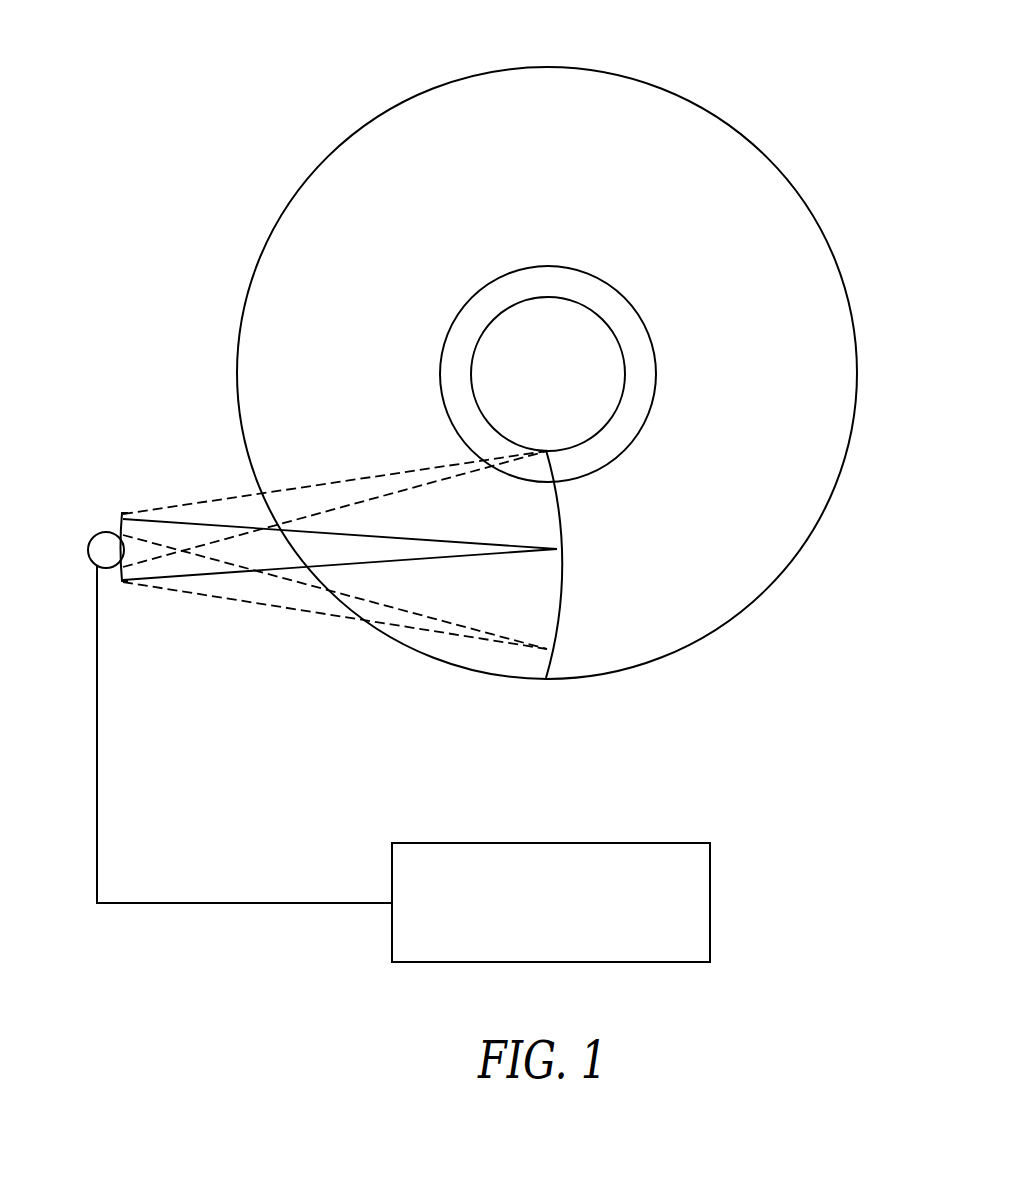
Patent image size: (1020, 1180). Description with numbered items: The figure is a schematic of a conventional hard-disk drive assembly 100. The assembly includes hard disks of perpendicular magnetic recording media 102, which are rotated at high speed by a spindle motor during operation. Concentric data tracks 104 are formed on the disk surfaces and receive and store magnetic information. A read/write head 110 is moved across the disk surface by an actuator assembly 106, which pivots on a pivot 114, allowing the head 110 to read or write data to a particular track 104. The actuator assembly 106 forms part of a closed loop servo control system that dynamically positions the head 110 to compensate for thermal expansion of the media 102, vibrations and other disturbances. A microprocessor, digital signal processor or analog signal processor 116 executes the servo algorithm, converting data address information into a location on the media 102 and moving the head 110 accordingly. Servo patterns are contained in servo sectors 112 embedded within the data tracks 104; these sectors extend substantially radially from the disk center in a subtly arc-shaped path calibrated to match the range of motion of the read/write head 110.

The hard-disk drive assembly 100 is at (255, 86).
The perpendicular magnetic recording media 102 is at (563, 147).
The concentric data tracks 104 is at (657, 372).
The actuator assembly 106 is at (156, 480).
The read/write head 110 is at (488, 555).
The servo sectors 112 is at (562, 513).
The pivot 114 is at (88, 551).
The signal processor 116 is at (563, 911).